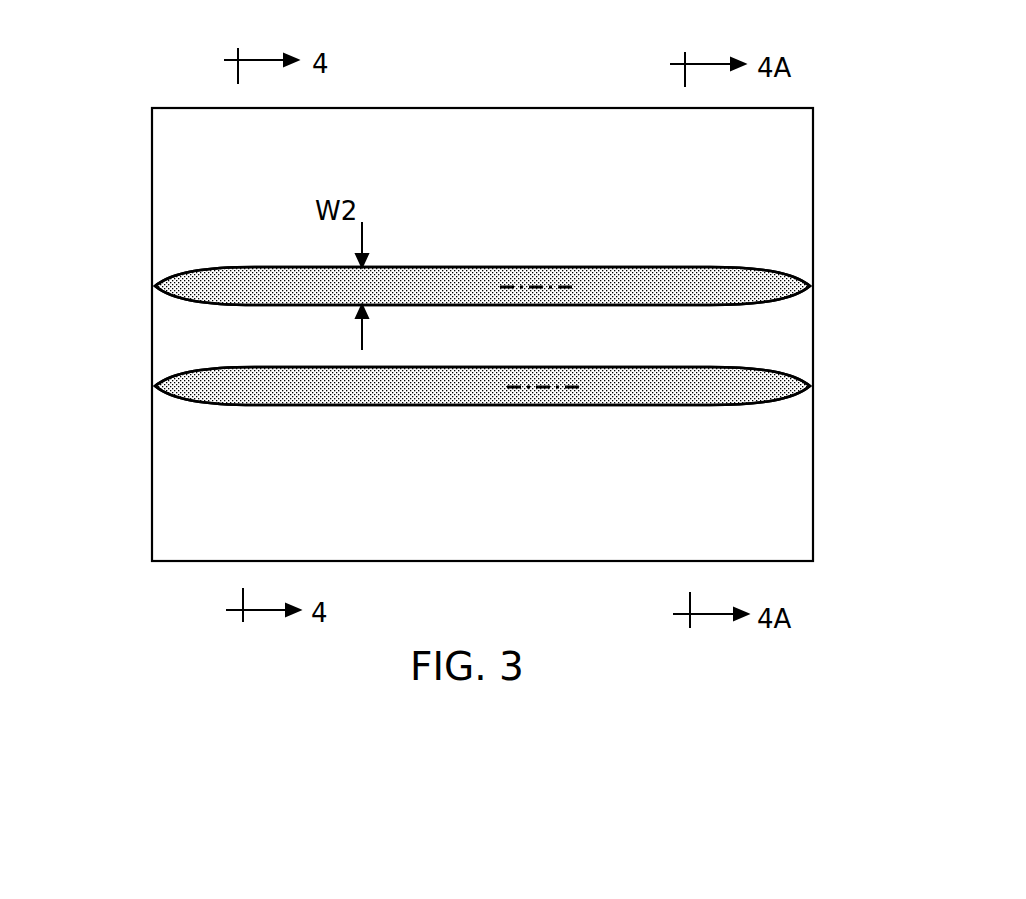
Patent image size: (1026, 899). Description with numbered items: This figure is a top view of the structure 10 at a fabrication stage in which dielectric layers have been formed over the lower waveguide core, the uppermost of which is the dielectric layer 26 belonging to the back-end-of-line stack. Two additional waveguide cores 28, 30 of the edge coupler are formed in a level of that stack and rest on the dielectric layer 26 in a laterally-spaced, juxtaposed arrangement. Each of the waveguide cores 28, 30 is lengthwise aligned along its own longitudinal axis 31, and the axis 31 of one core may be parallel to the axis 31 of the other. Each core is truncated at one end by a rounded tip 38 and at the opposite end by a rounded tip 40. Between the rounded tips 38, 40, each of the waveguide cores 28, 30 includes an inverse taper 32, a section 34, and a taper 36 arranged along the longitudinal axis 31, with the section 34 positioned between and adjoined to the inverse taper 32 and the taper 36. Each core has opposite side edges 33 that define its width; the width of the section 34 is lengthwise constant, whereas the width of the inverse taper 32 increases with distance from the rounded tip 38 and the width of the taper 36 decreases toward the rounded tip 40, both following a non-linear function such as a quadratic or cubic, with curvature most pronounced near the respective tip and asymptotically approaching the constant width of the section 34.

The electrode assembly 10 is at (112, 54).
The dielectric layer 26 is at (198, 513).
The waveguide core 28 is at (712, 203).
The waveguide core 30 is at (734, 470).
The longitudinal axis 31 is at (533, 286).
The inverse taper 32 is at (310, 287).
The side edges 33 is at (592, 268).
The section 34 is at (440, 282).
The taper 36 is at (708, 284).
The rounded tip 38 is at (152, 285).
The rounded tip 40 is at (812, 285).